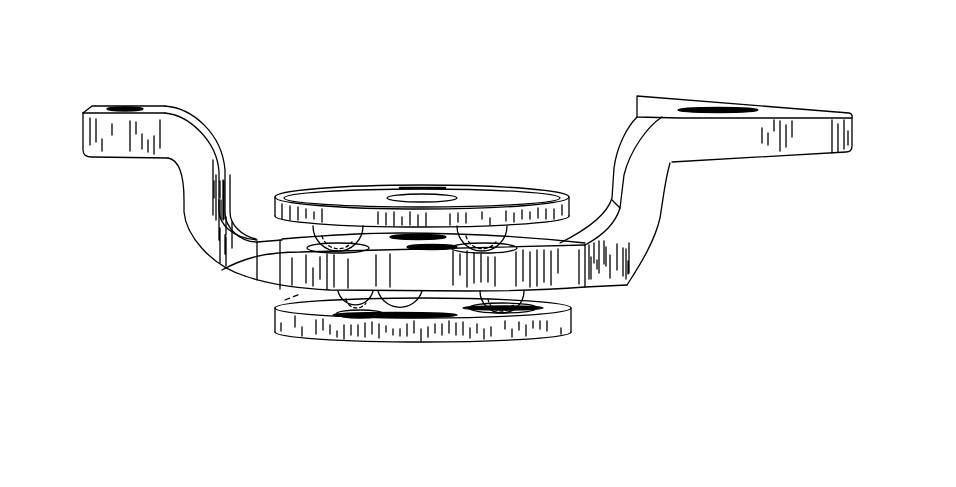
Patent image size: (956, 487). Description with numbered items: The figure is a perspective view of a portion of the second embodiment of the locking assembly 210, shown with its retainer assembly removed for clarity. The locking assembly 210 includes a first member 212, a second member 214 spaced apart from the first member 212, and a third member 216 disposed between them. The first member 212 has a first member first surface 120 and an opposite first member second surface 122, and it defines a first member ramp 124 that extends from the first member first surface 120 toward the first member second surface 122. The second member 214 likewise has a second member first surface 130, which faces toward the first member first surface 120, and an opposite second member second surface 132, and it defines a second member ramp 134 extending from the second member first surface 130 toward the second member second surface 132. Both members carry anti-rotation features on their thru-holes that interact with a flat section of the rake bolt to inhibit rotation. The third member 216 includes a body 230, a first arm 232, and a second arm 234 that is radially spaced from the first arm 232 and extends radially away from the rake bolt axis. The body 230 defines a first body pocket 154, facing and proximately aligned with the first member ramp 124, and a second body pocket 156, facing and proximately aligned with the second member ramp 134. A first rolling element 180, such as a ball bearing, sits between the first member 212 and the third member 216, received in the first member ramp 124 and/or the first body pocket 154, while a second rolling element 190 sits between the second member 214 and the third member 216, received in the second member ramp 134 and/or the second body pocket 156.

The locking assembly 210 is at (186, 376).
The third member 216 is at (634, 281).
The second arm 234 is at (152, 124).
The first arm 232 is at (737, 140).
The body 230 is at (296, 285).
The second body pocket 156 is at (250, 267).
The first body pocket 154 is at (305, 292).
The second member 214 is at (478, 170).
The second member first surface 130 is at (294, 229).
The second member second surface 132 is at (300, 193).
The second member ramp 134 is at (362, 192).
The second rolling element 190 is at (482, 234).
The first member 212 is at (508, 358).
The first member first surface 120 is at (283, 311).
The first member second surface 122 is at (331, 338).
The first member ramp 124 is at (361, 315).
The first rolling element 180 is at (532, 308).